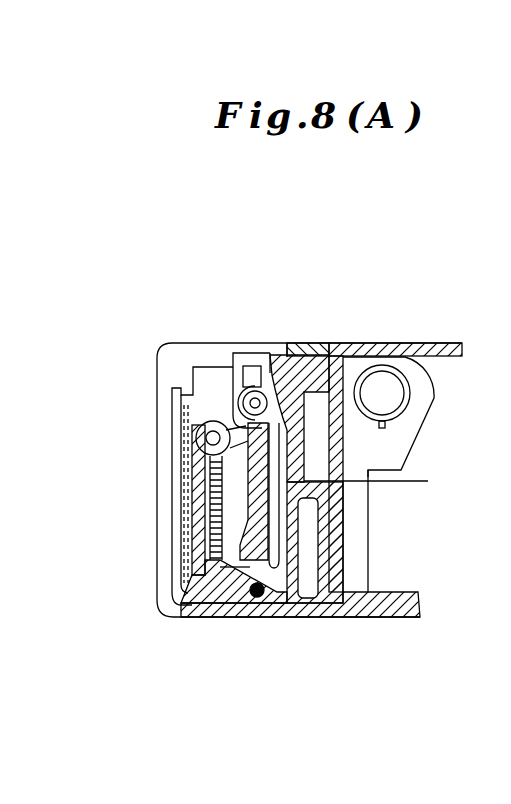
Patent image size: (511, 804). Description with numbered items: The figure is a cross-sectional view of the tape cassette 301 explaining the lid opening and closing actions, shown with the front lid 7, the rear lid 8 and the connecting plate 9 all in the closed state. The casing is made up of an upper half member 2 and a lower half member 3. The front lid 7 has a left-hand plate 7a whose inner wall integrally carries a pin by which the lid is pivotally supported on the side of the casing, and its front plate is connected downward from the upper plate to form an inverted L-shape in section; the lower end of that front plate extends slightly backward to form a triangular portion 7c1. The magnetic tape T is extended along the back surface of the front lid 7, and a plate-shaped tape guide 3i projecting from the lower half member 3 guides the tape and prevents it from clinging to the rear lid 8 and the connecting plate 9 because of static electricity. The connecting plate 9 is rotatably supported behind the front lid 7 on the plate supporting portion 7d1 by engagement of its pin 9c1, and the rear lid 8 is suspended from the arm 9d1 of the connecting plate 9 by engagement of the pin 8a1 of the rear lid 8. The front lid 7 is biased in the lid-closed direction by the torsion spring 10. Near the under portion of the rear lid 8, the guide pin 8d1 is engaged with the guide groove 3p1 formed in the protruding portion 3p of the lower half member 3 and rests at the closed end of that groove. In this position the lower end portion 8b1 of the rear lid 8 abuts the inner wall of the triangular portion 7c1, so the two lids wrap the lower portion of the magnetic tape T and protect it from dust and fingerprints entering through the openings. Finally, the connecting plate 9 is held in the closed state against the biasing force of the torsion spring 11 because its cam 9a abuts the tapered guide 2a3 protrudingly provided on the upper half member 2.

The tape cassette 301 is at (197, 207).
The front lid 7 is at (189, 344).
The plate supporting portion 7d1 is at (250, 362).
The connecting plate 9 is at (220, 391).
The cam 9a is at (283, 355).
The guide 2a3 is at (270, 387).
The pin 9c1 is at (287, 387).
The upper half member 2 is at (425, 341).
The arm 9d1 is at (213, 422).
The pin 8a1 is at (196, 437).
The tape guide 3i is at (200, 488).
The magnetic tape T is at (188, 548).
The triangular portion 7c1 is at (187, 620).
The lower end portion 8b1 is at (200, 618).
The rear lid 8 is at (220, 586).
The lower half member 3 is at (393, 618).
The guide groove 3p1 is at (262, 617).
The protruding portion 3p is at (247, 617).
The guide pin 8d1 is at (275, 617).
The torsion spring 10 is at (405, 382).
The left-hand plate 7a is at (403, 410).
The torsion spring 11 is at (423, 467).